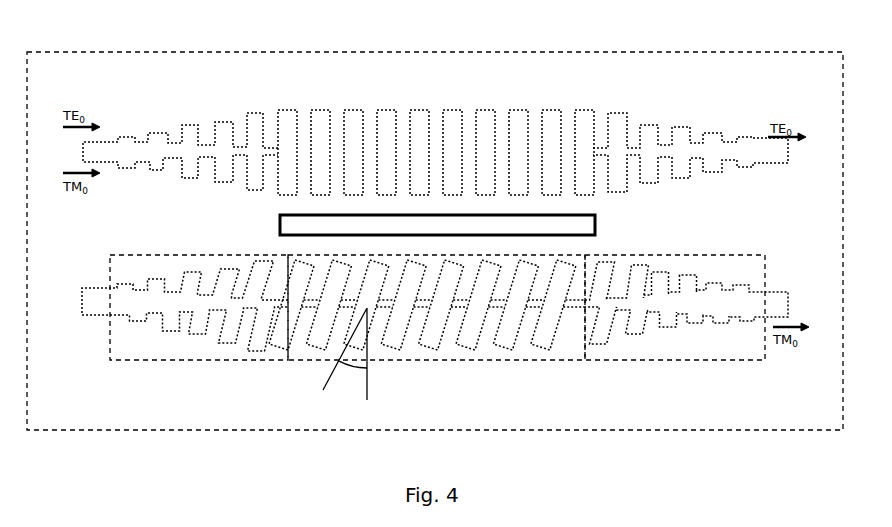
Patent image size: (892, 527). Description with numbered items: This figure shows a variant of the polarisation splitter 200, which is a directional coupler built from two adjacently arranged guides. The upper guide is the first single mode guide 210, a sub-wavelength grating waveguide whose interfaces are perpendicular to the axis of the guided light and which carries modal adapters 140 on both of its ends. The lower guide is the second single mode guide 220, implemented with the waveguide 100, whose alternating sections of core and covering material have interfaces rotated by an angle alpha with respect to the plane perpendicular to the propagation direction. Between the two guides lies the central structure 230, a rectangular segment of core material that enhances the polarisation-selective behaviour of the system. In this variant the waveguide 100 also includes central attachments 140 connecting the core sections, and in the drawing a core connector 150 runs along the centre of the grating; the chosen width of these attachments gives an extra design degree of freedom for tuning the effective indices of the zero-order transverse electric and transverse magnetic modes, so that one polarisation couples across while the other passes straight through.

The polarisation splitter 200 is at (642, 52).
The first single mode guide 210 is at (772, 158).
The second single mode guide 220 is at (456, 329).
The central structure 230 is at (597, 223).
The waveguide 100 is at (486, 361).
The modal adapter 140 is at (172, 362).
The waveguide core 150 is at (450, 306).